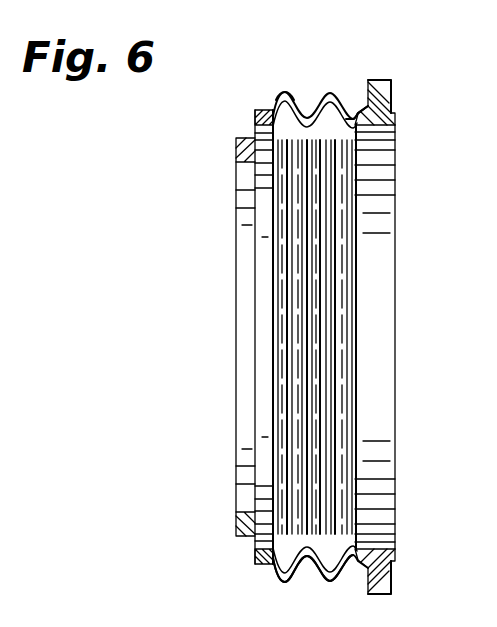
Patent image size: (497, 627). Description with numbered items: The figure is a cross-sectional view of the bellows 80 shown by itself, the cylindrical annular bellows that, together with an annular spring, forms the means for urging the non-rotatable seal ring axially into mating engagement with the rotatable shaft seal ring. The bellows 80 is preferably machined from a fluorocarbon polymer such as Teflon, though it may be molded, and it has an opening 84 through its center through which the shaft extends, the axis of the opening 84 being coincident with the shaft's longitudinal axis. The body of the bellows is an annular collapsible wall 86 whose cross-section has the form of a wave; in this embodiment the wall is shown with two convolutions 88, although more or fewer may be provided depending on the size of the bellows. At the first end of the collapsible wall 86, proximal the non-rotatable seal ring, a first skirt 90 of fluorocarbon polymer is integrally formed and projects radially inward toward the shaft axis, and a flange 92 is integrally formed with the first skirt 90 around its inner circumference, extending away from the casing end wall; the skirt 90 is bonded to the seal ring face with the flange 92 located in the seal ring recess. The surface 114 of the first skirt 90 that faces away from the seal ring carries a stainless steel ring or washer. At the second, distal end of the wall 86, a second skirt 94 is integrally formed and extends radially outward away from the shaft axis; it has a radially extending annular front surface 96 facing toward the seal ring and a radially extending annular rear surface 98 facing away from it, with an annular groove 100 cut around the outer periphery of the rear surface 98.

The bellows 80 is at (308, 82).
The opening 84 is at (246, 253).
The annular collapsible wall 86 is at (274, 82).
The convolutions 88 is at (330, 578).
The first skirt 90 is at (232, 117).
The flange 92 is at (253, 140).
The second skirt 94 is at (386, 64).
The front surface 96 is at (370, 86).
The rear surface 98 is at (410, 117).
The annular groove 100 is at (388, 100).
The surface 114 is at (237, 521).